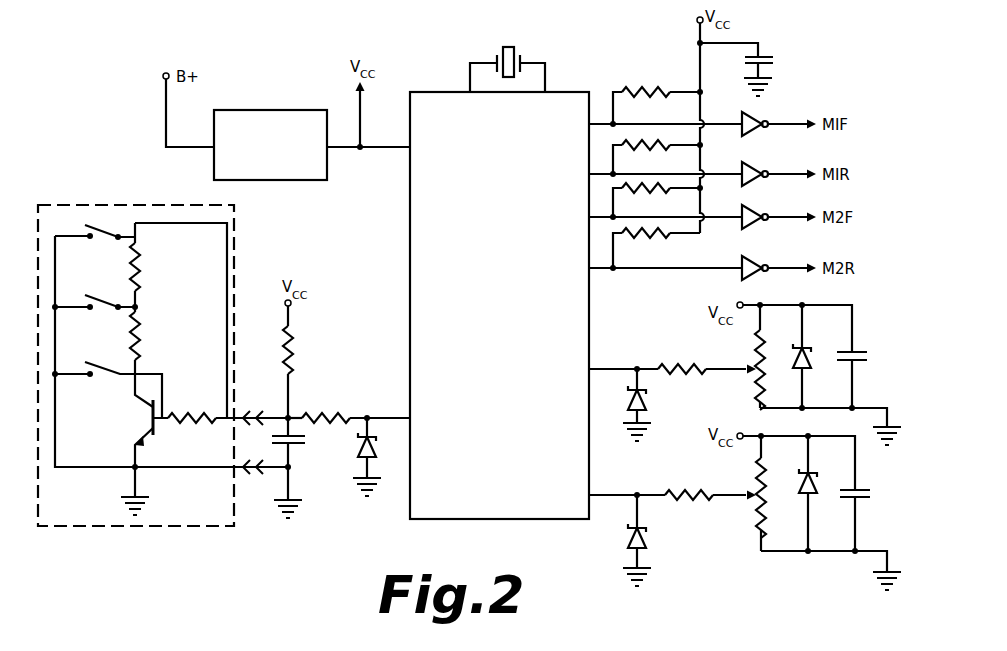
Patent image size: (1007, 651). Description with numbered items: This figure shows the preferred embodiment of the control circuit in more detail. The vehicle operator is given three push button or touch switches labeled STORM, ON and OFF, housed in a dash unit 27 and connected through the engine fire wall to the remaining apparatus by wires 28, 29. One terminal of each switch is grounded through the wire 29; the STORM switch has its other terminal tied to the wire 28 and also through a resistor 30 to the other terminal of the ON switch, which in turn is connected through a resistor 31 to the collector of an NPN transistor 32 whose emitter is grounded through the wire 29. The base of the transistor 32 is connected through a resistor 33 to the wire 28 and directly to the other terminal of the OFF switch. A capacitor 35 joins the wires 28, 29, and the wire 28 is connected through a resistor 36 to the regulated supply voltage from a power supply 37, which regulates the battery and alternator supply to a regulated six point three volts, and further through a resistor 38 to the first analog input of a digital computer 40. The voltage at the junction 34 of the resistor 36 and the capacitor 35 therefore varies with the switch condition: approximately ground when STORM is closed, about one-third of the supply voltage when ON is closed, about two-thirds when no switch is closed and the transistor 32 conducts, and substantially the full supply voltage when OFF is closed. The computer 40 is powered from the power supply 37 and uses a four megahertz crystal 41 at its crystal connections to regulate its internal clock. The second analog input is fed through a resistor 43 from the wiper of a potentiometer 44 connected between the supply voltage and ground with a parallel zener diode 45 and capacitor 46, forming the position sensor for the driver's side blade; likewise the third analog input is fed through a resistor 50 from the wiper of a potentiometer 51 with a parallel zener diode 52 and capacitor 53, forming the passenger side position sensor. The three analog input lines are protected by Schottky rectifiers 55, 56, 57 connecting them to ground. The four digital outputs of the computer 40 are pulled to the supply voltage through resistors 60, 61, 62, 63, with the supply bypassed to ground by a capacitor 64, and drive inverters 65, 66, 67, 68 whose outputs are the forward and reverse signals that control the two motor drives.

The dash unit 27 is at (174, 365).
The wire 28 is at (250, 416).
The wire 29 is at (250, 470).
The resistor 30 is at (140, 278).
The resistor 31 is at (140, 338).
The NPN transistor 32 is at (141, 411).
The resistor 33 is at (200, 413).
The junction 34 is at (297, 412).
The capacitor 35 is at (297, 445).
The resistor 36 is at (293, 355).
The power supply 37 is at (252, 110).
The resistor 38 is at (335, 412).
The digital computer 40 is at (410, 193).
The crystal 41 is at (515, 48).
The resistor 43 is at (690, 365).
The potentiometer 44 is at (753, 377).
The zener diode 45 is at (805, 349).
The capacitor 46 is at (858, 352).
The resistor 50 is at (703, 489).
The potentiometer 51 is at (758, 514).
The zener diode 52 is at (805, 497).
The capacitor 53 is at (860, 498).
The Schottky rectifier 55 is at (378, 456).
The Schottky rectifier 56 is at (628, 393).
The Schottky rectifier 57 is at (626, 516).
The resistor 60 is at (660, 88).
The resistor 61 is at (642, 149).
The resistor 62 is at (642, 192).
The resistor 63 is at (646, 238).
The capacitor 64 is at (762, 55).
The inverter 65 is at (752, 113).
The inverter 66 is at (752, 181).
The inverter 67 is at (752, 225).
The inverter 68 is at (745, 273).